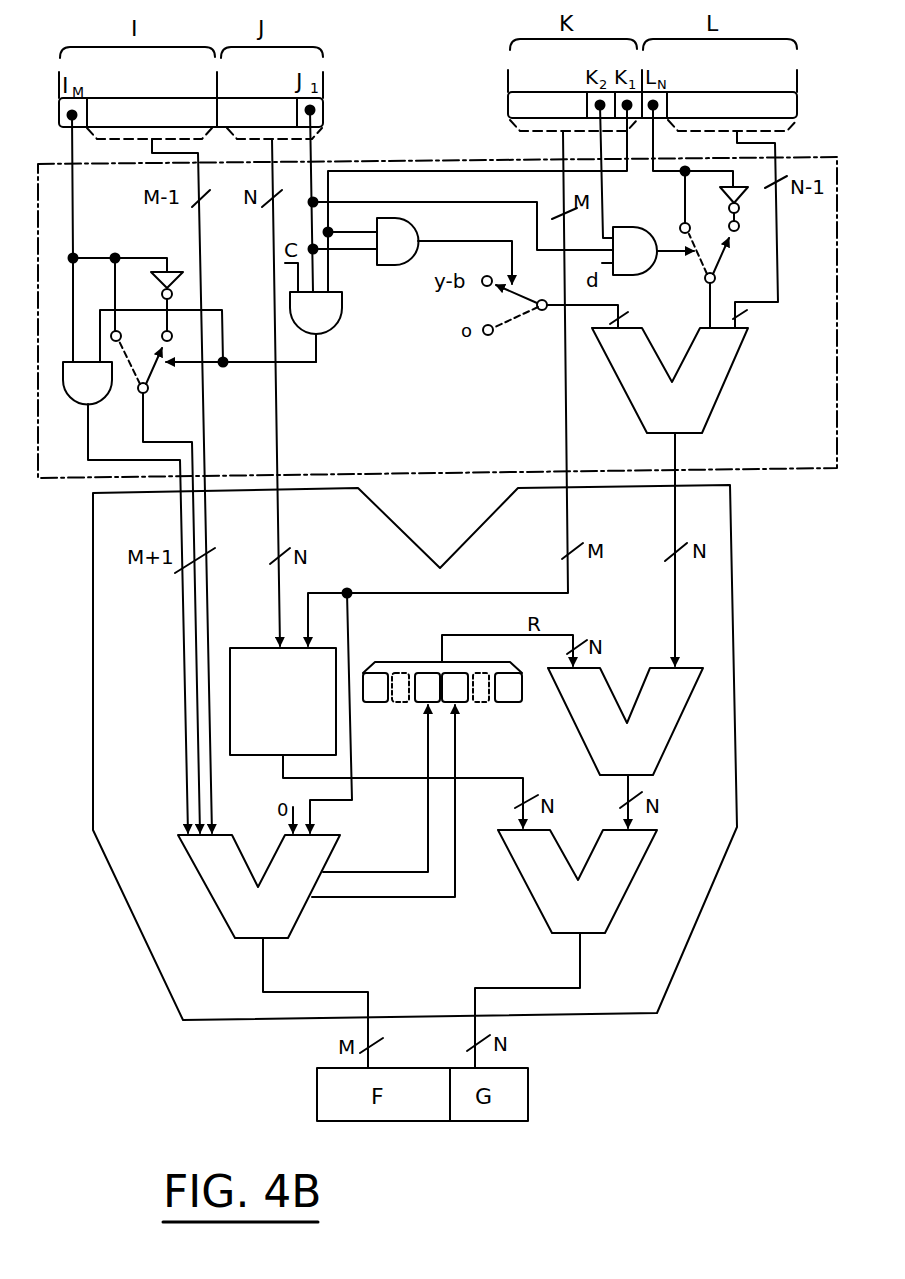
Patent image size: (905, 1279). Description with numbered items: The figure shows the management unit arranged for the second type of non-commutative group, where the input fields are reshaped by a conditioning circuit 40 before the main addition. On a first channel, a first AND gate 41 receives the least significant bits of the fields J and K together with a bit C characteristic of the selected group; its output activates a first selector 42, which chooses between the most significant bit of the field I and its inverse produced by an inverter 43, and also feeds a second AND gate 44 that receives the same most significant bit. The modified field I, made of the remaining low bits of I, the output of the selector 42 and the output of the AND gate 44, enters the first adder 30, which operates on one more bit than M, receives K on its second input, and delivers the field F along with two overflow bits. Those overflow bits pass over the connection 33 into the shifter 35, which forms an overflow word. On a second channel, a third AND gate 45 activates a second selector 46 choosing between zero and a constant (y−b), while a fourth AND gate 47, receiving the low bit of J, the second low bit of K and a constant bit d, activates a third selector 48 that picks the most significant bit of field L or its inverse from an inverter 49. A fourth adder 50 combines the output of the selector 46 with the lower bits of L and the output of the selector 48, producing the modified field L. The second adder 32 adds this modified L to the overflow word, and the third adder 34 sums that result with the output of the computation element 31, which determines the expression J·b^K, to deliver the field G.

The first adder 30 is at (210, 897).
The computation element 31 is at (247, 648).
The second adder 32 is at (572, 722).
The connection 33 is at (382, 897).
The third adder 34 is at (627, 897).
The shifter 35 is at (417, 715).
The conditioning circuit 40 is at (783, 468).
The first AND gate 41 is at (342, 316).
The first selector 42 is at (165, 370).
The inverter 43 is at (178, 270).
The second AND gate 44 is at (66, 360).
The third AND gate 45 is at (395, 268).
The second selector 46 is at (528, 334).
The fourth AND gate 47 is at (655, 267).
The third selector 48 is at (736, 250).
The inverter 49 is at (726, 207).
The fourth adder 50 is at (730, 380).